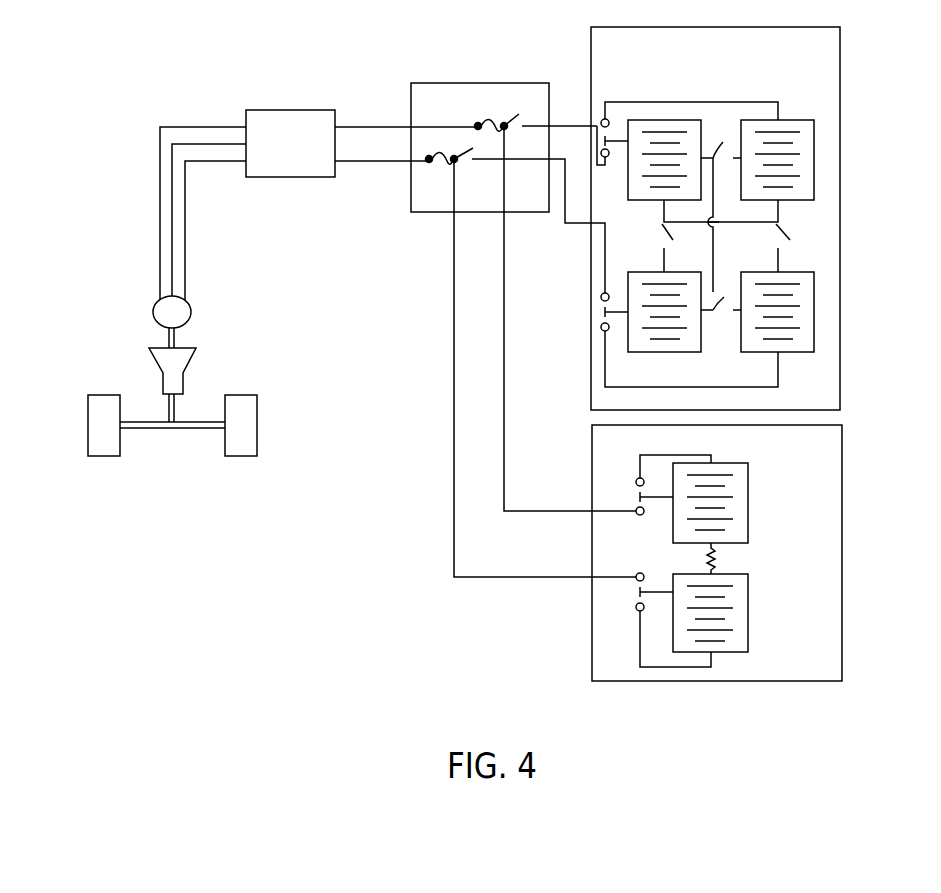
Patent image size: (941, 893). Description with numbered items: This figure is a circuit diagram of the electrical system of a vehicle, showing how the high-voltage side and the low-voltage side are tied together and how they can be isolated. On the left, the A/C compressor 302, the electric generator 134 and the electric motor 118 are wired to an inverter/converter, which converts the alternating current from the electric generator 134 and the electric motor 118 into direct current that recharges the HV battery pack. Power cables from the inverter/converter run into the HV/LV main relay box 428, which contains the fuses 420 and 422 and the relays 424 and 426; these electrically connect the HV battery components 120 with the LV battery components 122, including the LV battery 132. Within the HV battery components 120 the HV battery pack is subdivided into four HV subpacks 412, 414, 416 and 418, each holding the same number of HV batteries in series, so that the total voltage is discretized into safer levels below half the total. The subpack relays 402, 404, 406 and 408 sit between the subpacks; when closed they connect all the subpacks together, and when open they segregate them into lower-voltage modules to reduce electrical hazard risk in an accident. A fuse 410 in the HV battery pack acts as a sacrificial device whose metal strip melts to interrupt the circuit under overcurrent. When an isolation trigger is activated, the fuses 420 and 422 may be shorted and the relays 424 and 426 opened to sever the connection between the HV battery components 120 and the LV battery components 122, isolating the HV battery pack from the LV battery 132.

The A/C compressor 302 is at (293, 110).
The electric generator 134 is at (190, 311).
The electric motor 118 is at (190, 374).
The HV/LV main relay box 428 is at (420, 83).
The fuse 420 is at (503, 122).
The relay 424 is at (514, 114).
The fuse 422 is at (450, 166).
The relay 426 is at (466, 163).
The HV battery components 120 is at (830, 393).
The HV subpack 416 is at (637, 182).
The HV subpack 414 is at (817, 167).
The HV subpack 418 is at (628, 343).
The HV subpack 412 is at (818, 332).
The subpack relay 408 is at (721, 143).
The subpack relay 406 is at (725, 300).
The subpack relay 404 is at (652, 237).
The subpack relay 402 is at (788, 227).
The fuse 410 is at (720, 226).
The LV battery components 122 is at (832, 600).
The LV battery 132 is at (737, 652).